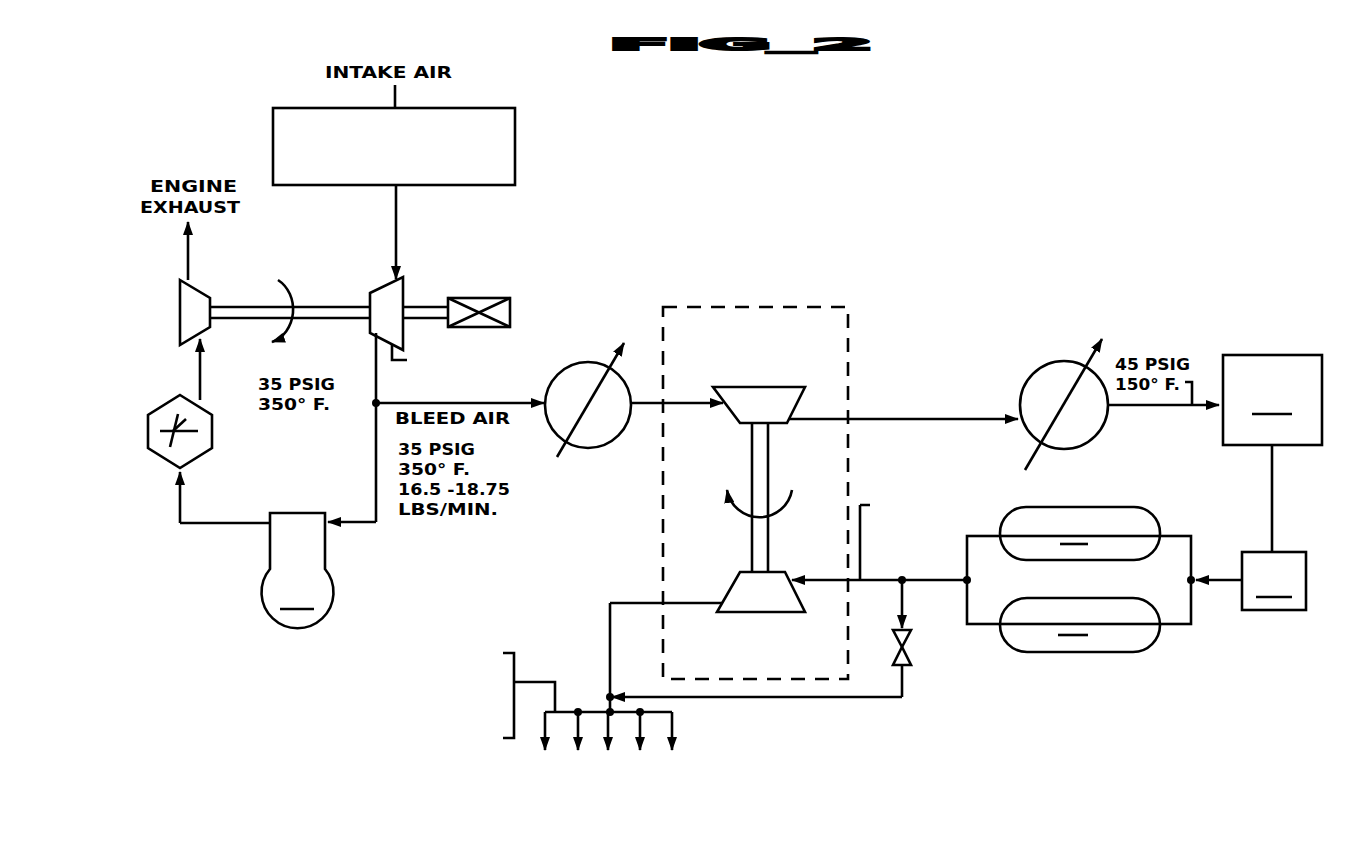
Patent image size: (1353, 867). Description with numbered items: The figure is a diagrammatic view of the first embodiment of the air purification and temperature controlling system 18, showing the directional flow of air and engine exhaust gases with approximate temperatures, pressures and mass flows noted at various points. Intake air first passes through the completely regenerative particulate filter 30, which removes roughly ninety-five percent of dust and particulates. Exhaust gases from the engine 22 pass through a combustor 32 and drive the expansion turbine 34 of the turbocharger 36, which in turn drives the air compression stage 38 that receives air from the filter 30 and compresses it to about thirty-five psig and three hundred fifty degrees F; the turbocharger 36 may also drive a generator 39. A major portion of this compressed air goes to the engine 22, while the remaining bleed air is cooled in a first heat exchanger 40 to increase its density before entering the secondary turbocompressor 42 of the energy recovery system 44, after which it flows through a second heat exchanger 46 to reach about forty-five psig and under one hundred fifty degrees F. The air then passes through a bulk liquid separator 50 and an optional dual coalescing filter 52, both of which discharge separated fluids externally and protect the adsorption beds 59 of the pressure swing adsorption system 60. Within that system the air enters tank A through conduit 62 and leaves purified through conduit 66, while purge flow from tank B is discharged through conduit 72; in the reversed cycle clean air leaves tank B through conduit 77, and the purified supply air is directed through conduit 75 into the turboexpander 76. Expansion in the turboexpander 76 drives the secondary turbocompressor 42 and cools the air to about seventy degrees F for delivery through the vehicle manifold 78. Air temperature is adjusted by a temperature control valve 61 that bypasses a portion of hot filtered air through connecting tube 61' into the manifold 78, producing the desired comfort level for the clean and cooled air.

The air purification and temperature controlling system 18 is at (799, 451).
The engine 22 is at (297, 597).
The particulate filter 30 is at (515, 143).
The combustor 32 is at (155, 450).
The expansion turbine 34 is at (187, 333).
The turbocharger 36 is at (325, 302).
The air compression stage 38 is at (404, 279).
The generator 39 is at (511, 312).
The first heat exchanger 40 is at (588, 362).
The secondary turbocompressor 42 is at (740, 418).
The energy recovery system 44 is at (749, 470).
The second heat exchanger 46 is at (1030, 372).
The bulk liquid separator 50 is at (1272, 368).
The dual coalescing filter 52 is at (1272, 618).
The adsorption beds 59 is at (1082, 607).
The pressure swing adsorption system 60 is at (1177, 525).
The temperature control valve 61 is at (918, 651).
The connecting tube 61' is at (757, 709).
The conduit 62 is at (1225, 580).
The conduit 66 is at (985, 533).
The conduit 72 is at (1180, 626).
The conduit 75 is at (873, 579).
The turboexpander 76 is at (734, 582).
The conduit 77 is at (984, 626).
The manifold 78 is at (606, 702).